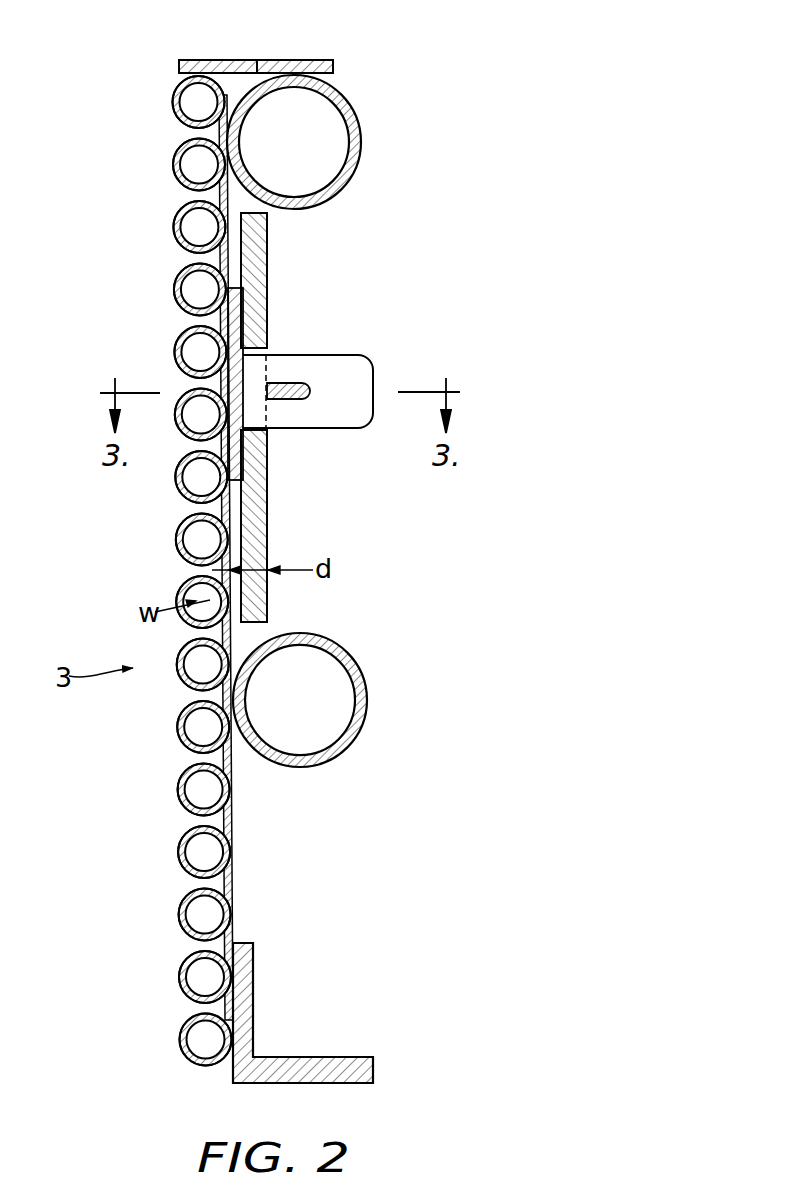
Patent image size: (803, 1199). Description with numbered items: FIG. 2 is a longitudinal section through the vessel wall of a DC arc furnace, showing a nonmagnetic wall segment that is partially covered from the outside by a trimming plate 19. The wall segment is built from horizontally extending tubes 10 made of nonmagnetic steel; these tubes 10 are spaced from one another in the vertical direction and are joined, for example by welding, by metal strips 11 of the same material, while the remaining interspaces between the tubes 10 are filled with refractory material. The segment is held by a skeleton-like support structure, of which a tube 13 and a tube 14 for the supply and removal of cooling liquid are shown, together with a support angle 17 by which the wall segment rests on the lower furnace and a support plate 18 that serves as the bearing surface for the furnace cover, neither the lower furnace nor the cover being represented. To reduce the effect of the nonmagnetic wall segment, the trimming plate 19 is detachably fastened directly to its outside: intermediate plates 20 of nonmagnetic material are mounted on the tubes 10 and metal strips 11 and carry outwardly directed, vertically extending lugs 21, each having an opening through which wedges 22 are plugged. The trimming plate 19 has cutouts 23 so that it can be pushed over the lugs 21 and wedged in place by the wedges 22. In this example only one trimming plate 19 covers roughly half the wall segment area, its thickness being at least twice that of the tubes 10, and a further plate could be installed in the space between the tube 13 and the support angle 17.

The tubes 10 is at (177, 540).
The metal strips 11 is at (222, 258).
The tube 13 is at (368, 682).
The tube 14 is at (362, 121).
The support angle 17 is at (318, 1057).
The support plate 18 is at (241, 61).
The trimming plate 19 is at (266, 245).
The intermediate plates 20 is at (237, 300).
The lugs 21 is at (352, 422).
The wedges 22 is at (315, 389).
The cutouts 23 is at (268, 432).